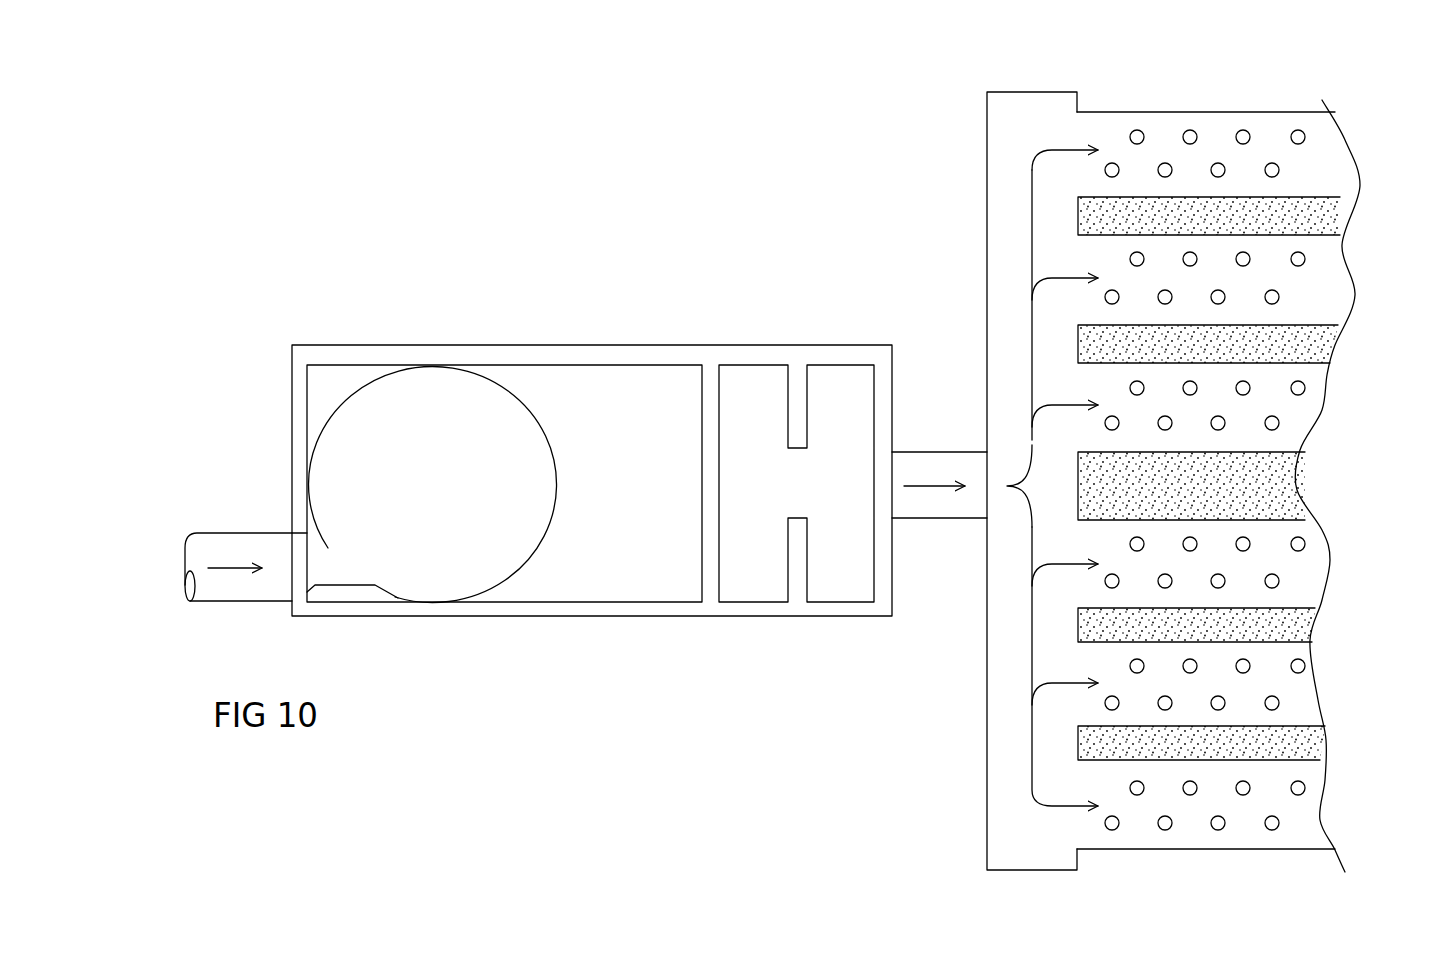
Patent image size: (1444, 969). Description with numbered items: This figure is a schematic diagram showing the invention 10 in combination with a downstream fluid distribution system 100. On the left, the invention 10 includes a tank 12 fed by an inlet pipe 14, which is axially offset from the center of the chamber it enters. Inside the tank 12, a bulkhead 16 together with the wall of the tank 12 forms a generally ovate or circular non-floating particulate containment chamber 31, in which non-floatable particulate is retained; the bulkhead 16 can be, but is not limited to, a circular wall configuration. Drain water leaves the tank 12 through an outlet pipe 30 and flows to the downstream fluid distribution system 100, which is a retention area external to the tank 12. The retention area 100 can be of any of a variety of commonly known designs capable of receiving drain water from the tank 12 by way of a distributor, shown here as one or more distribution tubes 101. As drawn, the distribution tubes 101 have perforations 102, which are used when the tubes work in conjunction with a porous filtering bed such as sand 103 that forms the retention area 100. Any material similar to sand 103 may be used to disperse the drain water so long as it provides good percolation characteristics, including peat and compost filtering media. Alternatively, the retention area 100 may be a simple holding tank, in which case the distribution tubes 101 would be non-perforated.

The invention 10 is at (402, 254).
The tank 12 is at (340, 345).
The inlet pipe 14 is at (240, 534).
The bulkhead 16 is at (505, 388).
The outlet pipe 30 is at (942, 452).
The non-floating particulate containment chamber 31 is at (434, 486).
The downstream fluid distribution system 100 is at (970, 72).
The distribution tubes 101 is at (1330, 154).
The perforations 102 is at (1190, 130).
The sand 103 is at (1327, 346).